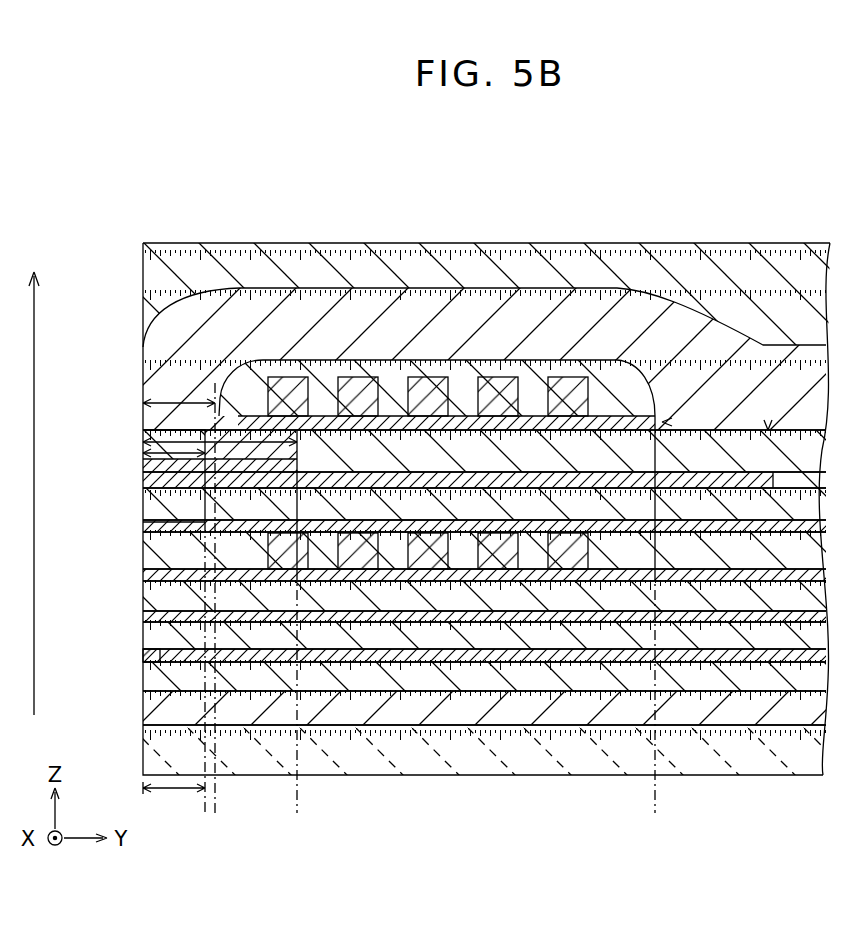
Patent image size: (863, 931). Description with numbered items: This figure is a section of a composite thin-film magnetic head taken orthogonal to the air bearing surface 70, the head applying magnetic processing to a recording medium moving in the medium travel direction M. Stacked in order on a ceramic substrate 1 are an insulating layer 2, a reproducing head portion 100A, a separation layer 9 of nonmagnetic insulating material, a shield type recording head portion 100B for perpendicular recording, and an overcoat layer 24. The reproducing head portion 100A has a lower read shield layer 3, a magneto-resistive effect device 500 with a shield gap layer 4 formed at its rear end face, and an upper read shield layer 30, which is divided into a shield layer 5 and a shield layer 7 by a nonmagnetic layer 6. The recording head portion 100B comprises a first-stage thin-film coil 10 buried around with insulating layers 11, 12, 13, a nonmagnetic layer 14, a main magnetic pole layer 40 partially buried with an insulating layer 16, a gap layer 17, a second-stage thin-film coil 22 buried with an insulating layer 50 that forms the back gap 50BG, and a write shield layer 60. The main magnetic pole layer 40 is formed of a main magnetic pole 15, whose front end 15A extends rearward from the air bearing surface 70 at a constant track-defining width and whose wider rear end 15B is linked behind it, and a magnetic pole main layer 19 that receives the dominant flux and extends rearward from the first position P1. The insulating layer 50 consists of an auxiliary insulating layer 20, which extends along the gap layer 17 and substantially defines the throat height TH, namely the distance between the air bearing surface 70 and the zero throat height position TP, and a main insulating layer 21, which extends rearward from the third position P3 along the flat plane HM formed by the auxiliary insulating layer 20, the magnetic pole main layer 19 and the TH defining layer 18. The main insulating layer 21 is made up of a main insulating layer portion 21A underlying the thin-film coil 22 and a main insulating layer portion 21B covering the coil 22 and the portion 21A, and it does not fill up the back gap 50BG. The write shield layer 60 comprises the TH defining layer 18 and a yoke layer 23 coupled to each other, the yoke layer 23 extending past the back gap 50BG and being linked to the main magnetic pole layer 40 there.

The substrate 1 is at (742, 750).
The insulating layer 2 is at (722, 718).
The lower read shield layer 3 is at (685, 680).
The shield gap layer 4 is at (618, 660).
The shield layer 5 is at (577, 647).
The nonmagnetic layer 6 is at (542, 617).
The shield layer 7 is at (510, 600).
The separation layer 9 is at (465, 578).
The first-stage thin-film coil 10 is at (426, 568).
The insulating layer 11 is at (388, 585).
The insulating layer 12 is at (773, 560).
The insulating layer 13 is at (360, 527).
The nonmagnetic layer 14 is at (274, 512).
The main magnetic pole 15 is at (484, 322).
The front end 15A is at (310, 430).
The rear end 15B is at (363, 416).
The insulating layer 16 is at (807, 483).
The gap layer 17 is at (230, 460).
The TH defining layer 18 is at (176, 430).
The magnetic pole main layer 19 is at (437, 425).
The auxiliary insulating layer 20 is at (277, 457).
The main insulating layer 21 is at (477, 289).
The main insulating layer portion 21A is at (570, 425).
The main insulating layer portion 21B is at (613, 375).
The second-stage thin-film coil 22 is at (490, 387).
The yoke layer 23 is at (187, 460).
The overcoat layer 24 is at (799, 243).
The upper read shield layer 30 is at (590, 822).
The main magnetic pole layer 40 is at (343, 154).
The insulating layer 50 is at (655, 154).
The back gap 50BG is at (664, 422).
The write shield layer 60 is at (283, 197).
The air bearing surface 70 is at (133, 295).
The reproducing head portion 100A is at (135, 583).
The recording head portion 100B is at (135, 347).
The magneto-resistive effect device 500 is at (143, 746).
The flat plane HM is at (768, 430).
The throat height TH is at (174, 799).
The zero throat height position TP is at (205, 838).
The first position P1 is at (295, 838).
The third position P3 is at (215, 838).
The medium travel direction M is at (36, 712).